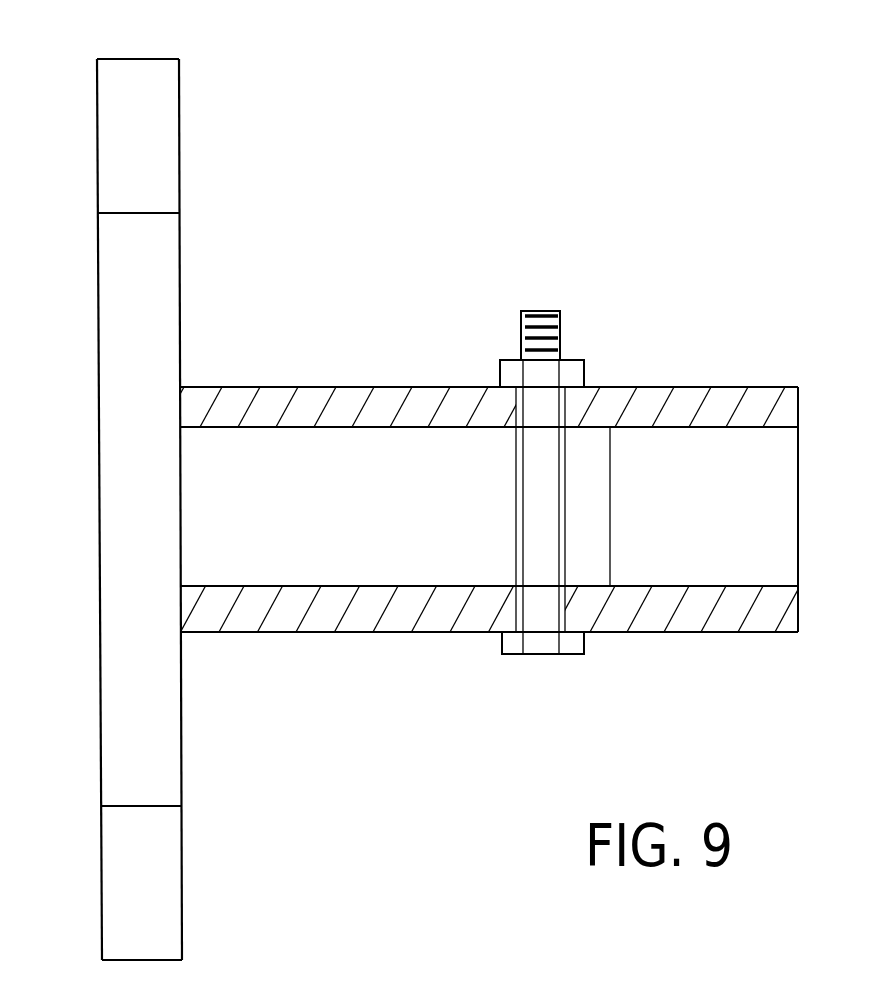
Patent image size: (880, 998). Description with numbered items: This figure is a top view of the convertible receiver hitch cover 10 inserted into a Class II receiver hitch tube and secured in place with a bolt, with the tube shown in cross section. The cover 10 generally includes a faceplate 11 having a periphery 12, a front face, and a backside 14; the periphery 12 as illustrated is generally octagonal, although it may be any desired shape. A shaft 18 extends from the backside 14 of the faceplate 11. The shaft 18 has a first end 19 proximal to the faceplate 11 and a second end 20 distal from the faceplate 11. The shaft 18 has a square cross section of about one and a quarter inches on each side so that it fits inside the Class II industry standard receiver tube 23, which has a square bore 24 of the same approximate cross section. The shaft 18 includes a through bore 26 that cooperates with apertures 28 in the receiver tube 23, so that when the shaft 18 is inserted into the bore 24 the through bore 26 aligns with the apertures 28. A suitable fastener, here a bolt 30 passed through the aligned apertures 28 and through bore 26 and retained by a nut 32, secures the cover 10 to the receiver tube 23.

The convertible receiver hitch cover 10 is at (98, 312).
The faceplate 11 is at (133, 517).
The periphery 12 is at (110, 59).
The backside 14 is at (180, 168).
The shaft 18 is at (415, 452).
The first end 19 is at (233, 452).
The second end 20 is at (593, 550).
The receiver tube 23 is at (698, 398).
The square bore 24 is at (690, 583).
The through bore 26 is at (567, 475).
The apertures 28 is at (598, 388).
The bolt 30 is at (545, 642).
The nut 32 is at (513, 371).